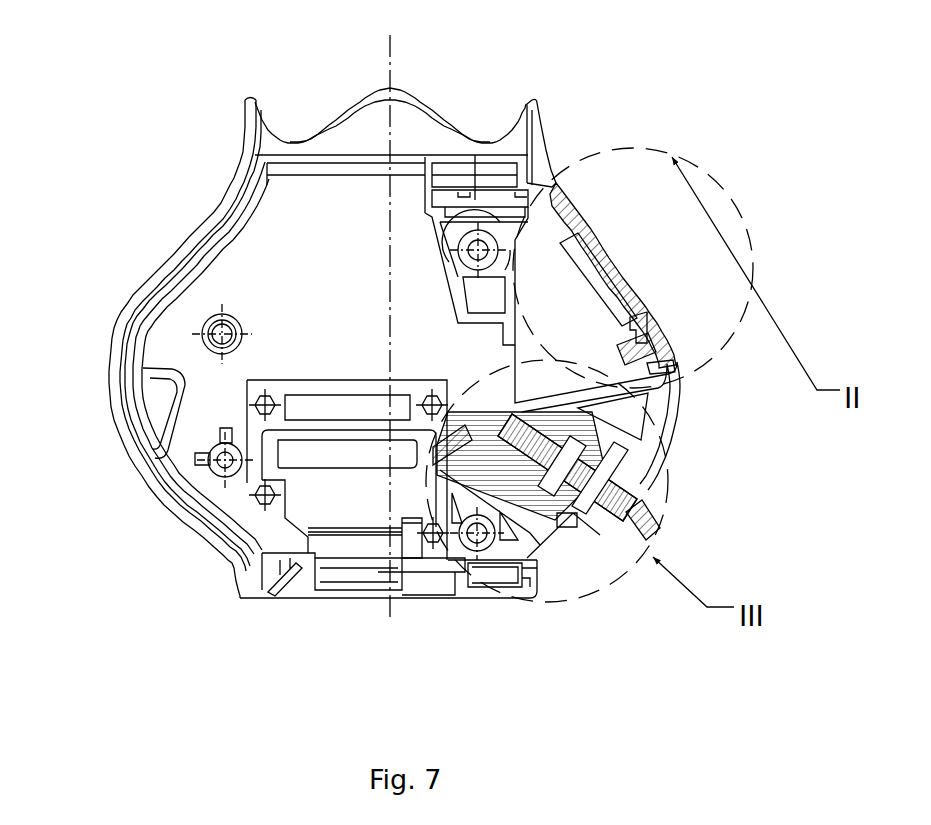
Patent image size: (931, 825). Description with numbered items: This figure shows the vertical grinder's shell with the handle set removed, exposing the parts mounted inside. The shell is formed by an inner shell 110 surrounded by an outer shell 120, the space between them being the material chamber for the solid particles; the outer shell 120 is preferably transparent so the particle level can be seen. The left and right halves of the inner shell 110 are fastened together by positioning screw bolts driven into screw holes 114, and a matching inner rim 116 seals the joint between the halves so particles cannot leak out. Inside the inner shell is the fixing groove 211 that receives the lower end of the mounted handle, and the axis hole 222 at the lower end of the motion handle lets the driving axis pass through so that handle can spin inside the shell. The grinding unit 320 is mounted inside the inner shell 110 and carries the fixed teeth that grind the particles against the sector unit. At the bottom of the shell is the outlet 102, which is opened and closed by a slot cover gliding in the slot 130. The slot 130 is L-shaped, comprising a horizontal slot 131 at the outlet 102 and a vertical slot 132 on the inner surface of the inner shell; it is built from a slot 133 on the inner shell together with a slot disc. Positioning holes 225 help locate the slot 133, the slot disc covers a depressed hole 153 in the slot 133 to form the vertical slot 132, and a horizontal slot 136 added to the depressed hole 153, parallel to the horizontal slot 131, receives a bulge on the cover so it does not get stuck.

The outlet 102 is at (421, 518).
The inner shell 110 is at (206, 245).
The screw holes 114 is at (487, 243).
The inner rim 116 is at (148, 343).
The outer shell 120 is at (228, 190).
The slot 130 is at (345, 525).
The horizontal slot 131 is at (430, 567).
The vertical slot 132 is at (202, 585).
The depressed hole 153 is at (255, 556).
The slot on the inner shell 133 is at (320, 495).
The horizontal slot 136 is at (318, 455).
The fixing groove 211 is at (476, 197).
The axis hole 222 is at (214, 462).
The positioning holes 225 is at (258, 406).
The grinding unit 320 is at (505, 492).